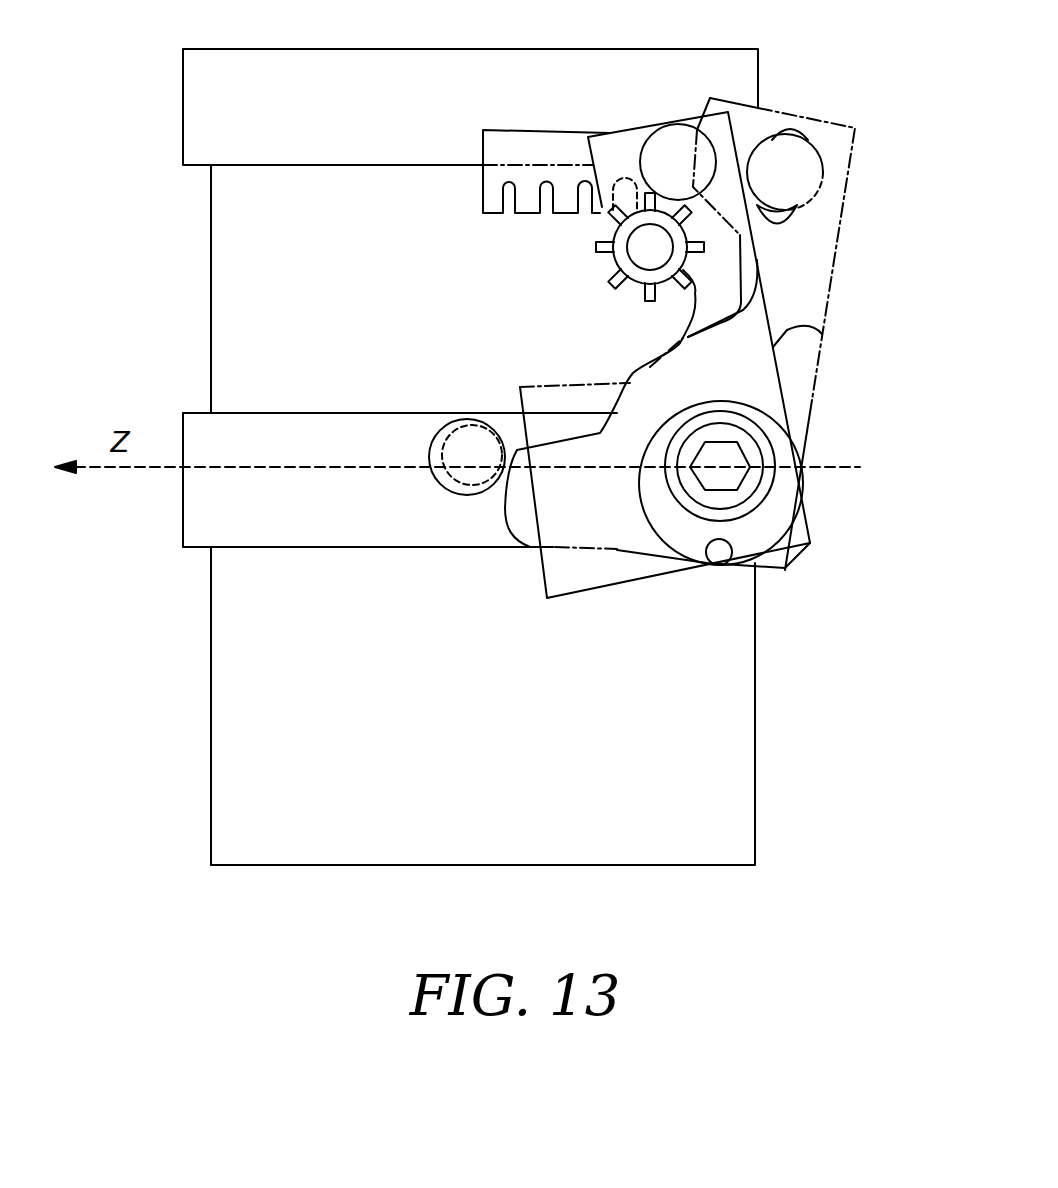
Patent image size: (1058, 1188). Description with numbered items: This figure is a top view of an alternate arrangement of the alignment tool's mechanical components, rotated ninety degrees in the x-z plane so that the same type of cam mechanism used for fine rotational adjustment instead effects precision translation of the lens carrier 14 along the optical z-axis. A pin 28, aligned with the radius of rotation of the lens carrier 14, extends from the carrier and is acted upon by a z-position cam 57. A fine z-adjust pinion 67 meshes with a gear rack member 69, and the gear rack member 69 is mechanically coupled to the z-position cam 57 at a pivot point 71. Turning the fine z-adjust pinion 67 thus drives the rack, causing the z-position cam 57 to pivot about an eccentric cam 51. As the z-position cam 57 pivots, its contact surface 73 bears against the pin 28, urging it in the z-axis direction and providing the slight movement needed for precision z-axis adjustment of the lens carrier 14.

The lens carrier 14 is at (757, 660).
The pin 28 is at (443, 479).
The eccentric cam 51 is at (767, 492).
The z-position cam 57 is at (828, 333).
The fine z-adjust pinion 67 is at (618, 272).
The gear rack member 69 is at (508, 181).
The pivot point 71 is at (660, 137).
The contact surface 73 is at (500, 550).